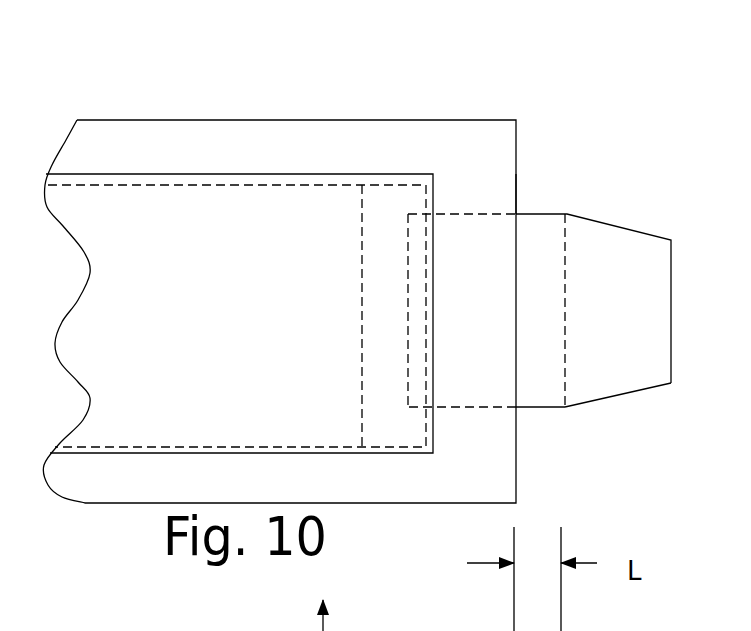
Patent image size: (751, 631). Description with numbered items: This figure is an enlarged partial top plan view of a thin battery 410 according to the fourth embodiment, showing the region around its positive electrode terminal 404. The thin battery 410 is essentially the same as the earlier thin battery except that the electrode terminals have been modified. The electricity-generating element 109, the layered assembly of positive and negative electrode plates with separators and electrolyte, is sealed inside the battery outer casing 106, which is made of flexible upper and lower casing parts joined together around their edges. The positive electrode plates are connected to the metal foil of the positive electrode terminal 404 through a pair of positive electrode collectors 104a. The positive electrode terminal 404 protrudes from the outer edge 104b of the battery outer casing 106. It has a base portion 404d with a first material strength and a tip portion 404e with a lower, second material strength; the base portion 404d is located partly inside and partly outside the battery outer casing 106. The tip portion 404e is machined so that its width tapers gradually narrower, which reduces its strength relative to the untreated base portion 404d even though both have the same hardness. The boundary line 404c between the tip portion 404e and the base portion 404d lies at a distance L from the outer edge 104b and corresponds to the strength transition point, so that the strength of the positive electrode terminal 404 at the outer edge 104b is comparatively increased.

The battery outer casing 106 is at (248, 148).
The electricity-generating element 109 is at (122, 245).
The positive electrode collectors 104a is at (388, 315).
The outer edge 104b is at (523, 190).
The thin battery 410 is at (508, 85).
The positive electrode terminal 404 is at (648, 300).
The boundary line 404c is at (566, 300).
The base portion 404d is at (548, 368).
The tip portion 404e is at (633, 368).